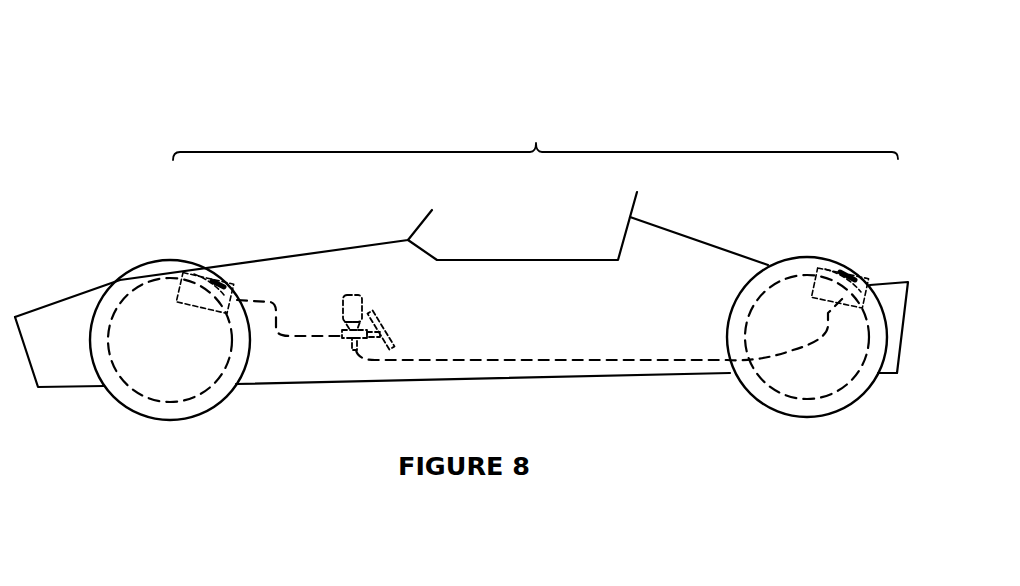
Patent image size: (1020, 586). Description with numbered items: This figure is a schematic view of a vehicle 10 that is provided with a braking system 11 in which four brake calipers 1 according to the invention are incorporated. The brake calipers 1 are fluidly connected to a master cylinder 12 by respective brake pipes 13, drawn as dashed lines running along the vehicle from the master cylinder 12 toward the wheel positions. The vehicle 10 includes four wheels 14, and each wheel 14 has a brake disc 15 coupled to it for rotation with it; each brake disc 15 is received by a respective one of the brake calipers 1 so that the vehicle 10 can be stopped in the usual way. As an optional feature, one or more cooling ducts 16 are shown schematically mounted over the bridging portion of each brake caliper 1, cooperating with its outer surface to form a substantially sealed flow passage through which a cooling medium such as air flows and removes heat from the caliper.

The vehicle 10 is at (141, 75).
The braking system 11 is at (535, 131).
The brake caliper 1 is at (190, 273).
The master cylinder 12 is at (377, 290).
The brake pipe 13 is at (273, 313).
The wheel 14 is at (112, 398).
The brake disc 15 is at (138, 287).
The cooling duct 16 is at (226, 286).